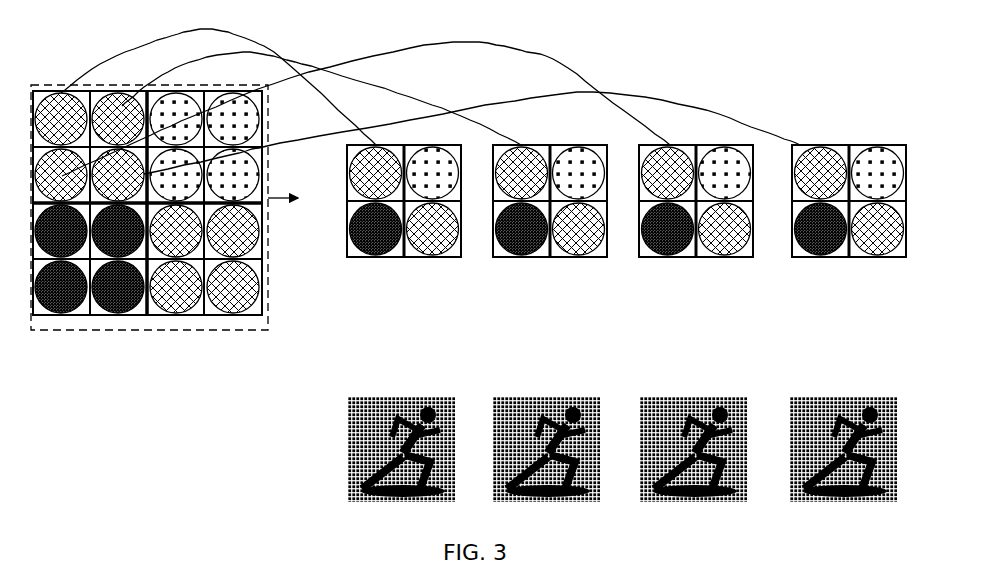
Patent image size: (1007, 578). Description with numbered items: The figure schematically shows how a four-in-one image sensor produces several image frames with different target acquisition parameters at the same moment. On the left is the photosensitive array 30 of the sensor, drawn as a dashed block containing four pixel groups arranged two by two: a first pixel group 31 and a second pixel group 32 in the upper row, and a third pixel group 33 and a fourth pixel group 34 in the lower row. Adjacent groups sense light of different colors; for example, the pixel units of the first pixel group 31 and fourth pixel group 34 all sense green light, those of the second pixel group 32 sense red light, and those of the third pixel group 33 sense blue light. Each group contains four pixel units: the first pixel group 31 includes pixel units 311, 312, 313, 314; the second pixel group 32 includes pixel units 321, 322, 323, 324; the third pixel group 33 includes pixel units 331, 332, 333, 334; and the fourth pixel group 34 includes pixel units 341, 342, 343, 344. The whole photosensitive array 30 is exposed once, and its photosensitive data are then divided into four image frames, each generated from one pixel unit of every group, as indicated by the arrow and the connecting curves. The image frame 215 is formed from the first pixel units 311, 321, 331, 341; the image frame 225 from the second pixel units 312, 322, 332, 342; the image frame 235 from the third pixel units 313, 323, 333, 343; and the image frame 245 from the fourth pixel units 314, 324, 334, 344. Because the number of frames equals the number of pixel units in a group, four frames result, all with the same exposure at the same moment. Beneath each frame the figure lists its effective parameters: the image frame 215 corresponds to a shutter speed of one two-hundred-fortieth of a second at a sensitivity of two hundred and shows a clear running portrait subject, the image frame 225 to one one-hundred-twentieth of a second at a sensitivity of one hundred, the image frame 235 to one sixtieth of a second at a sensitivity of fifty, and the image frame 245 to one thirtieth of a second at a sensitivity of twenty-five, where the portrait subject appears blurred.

The photosensitive array 30 is at (236, 332).
The first pixel group 31 is at (88, 89).
The second pixel group 32 is at (203, 89).
The third pixel group 33 is at (90, 315).
The fourth pixel group 34 is at (205, 315).
The first pixel unit 311 is at (218, 114).
The second pixel unit 312 is at (320, 125).
The third pixel unit 313 is at (364, 121).
The fourth pixel unit 314 is at (469, 146).
The first pixel unit 321 is at (304, 146).
The second pixel unit 322 is at (406, 146).
The third pixel unit 323 is at (450, 174).
The fourth pixel unit 324 is at (555, 174).
The first pixel unit 331 is at (218, 230).
The second pixel unit 332 is at (320, 230).
The third pixel unit 333 is at (364, 258).
The fourth pixel unit 334 is at (469, 258).
The first pixel unit 341 is at (304, 230).
The second pixel unit 342 is at (406, 230).
The third pixel unit 343 is at (450, 258).
The fourth pixel unit 344 is at (555, 258).
The image frame 215 is at (404, 257).
The image frame 225 is at (550, 257).
The image frame 235 is at (697, 257).
The image frame 245 is at (848, 257).